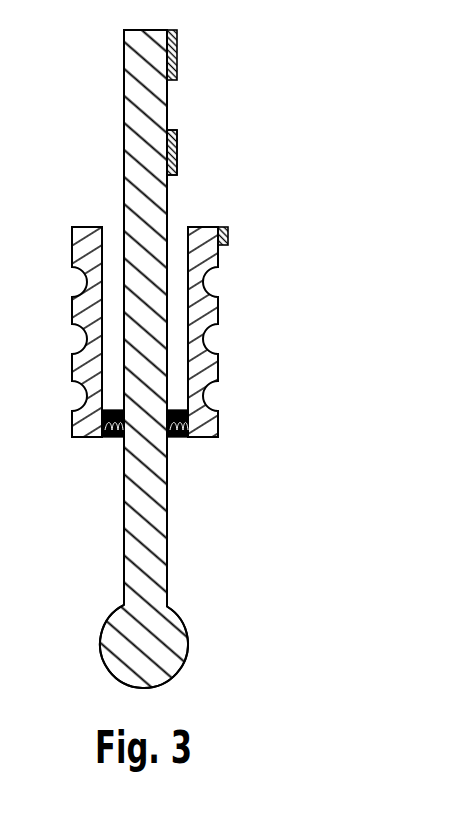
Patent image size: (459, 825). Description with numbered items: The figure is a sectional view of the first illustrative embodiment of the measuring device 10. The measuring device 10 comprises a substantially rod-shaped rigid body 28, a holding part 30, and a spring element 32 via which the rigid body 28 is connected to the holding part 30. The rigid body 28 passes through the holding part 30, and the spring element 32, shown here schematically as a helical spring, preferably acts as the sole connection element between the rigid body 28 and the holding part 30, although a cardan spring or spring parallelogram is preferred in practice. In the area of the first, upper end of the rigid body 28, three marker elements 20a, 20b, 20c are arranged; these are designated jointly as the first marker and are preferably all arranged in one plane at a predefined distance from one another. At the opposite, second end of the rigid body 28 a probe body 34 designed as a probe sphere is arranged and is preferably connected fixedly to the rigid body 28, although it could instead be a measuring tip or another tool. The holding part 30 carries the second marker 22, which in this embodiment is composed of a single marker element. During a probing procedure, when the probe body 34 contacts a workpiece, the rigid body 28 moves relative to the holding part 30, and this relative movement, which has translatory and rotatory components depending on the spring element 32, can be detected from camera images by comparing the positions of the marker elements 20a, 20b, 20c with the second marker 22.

The measuring device 10 is at (166, 358).
The marker element 20a is at (178, 150).
The marker element 20b is at (172, 152).
The marker element 20c is at (178, 52).
The second marker 22 is at (229, 232).
The rigid body 28 is at (133, 107).
The holding part 30 is at (71, 318).
The spring element 32 is at (175, 438).
The probe body 34 is at (166, 642).